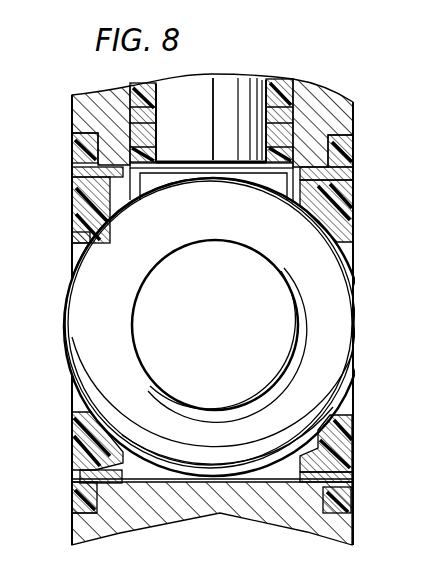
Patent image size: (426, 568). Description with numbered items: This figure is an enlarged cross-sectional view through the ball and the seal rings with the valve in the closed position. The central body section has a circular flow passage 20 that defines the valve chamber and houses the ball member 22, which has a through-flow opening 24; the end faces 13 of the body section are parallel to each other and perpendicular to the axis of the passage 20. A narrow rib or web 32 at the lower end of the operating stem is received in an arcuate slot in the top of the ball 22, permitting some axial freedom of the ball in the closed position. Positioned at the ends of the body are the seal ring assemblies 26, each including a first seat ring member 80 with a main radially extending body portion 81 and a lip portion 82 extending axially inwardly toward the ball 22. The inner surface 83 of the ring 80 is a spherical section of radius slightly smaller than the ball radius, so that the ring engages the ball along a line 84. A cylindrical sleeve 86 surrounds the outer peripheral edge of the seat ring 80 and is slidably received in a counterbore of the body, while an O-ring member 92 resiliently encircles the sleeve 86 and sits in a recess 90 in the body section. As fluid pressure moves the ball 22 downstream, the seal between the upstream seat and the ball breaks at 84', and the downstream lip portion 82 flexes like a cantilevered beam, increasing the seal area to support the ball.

The end faces 13 is at (75, 112).
The circular flow passage 20 is at (163, 477).
The ball member 22 is at (78, 267).
The through-flow opening 24 is at (160, 262).
The seal ring assemblies 26 is at (42, 238).
The rib or web 32 is at (150, 195).
The first seat ring member 80 is at (75, 208).
The main radially extending body portion 81 is at (80, 185).
The lip portion 82 is at (135, 208).
The inner surface 83 is at (93, 230).
The line 84 is at (212, 437).
The broken seal location 84' is at (212, 271).
The cylindrical sleeve 86 is at (345, 172).
The recess 90 is at (72, 510).
The O-ring member 92 is at (72, 500).